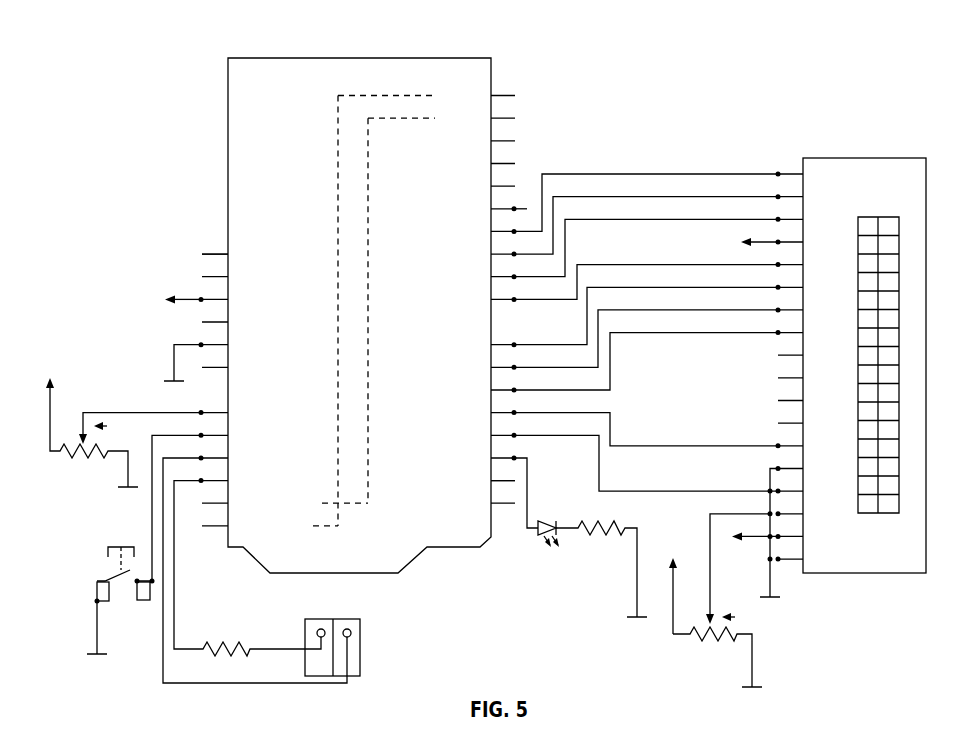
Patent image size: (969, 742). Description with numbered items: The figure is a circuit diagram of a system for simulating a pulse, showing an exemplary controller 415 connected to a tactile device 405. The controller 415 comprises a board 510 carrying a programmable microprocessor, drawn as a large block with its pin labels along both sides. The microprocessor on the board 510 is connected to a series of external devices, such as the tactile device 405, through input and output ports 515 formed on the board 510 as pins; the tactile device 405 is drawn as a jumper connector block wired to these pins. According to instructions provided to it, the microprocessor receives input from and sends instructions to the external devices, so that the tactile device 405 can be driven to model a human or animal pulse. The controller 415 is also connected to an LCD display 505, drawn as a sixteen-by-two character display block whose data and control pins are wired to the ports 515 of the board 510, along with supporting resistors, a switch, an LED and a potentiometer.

The controller 415 is at (640, 50).
The board 510 is at (285, 73).
The LCD display 505 is at (834, 158).
The input and output ports 515 is at (226, 253).
The tactile device 405 is at (361, 655).